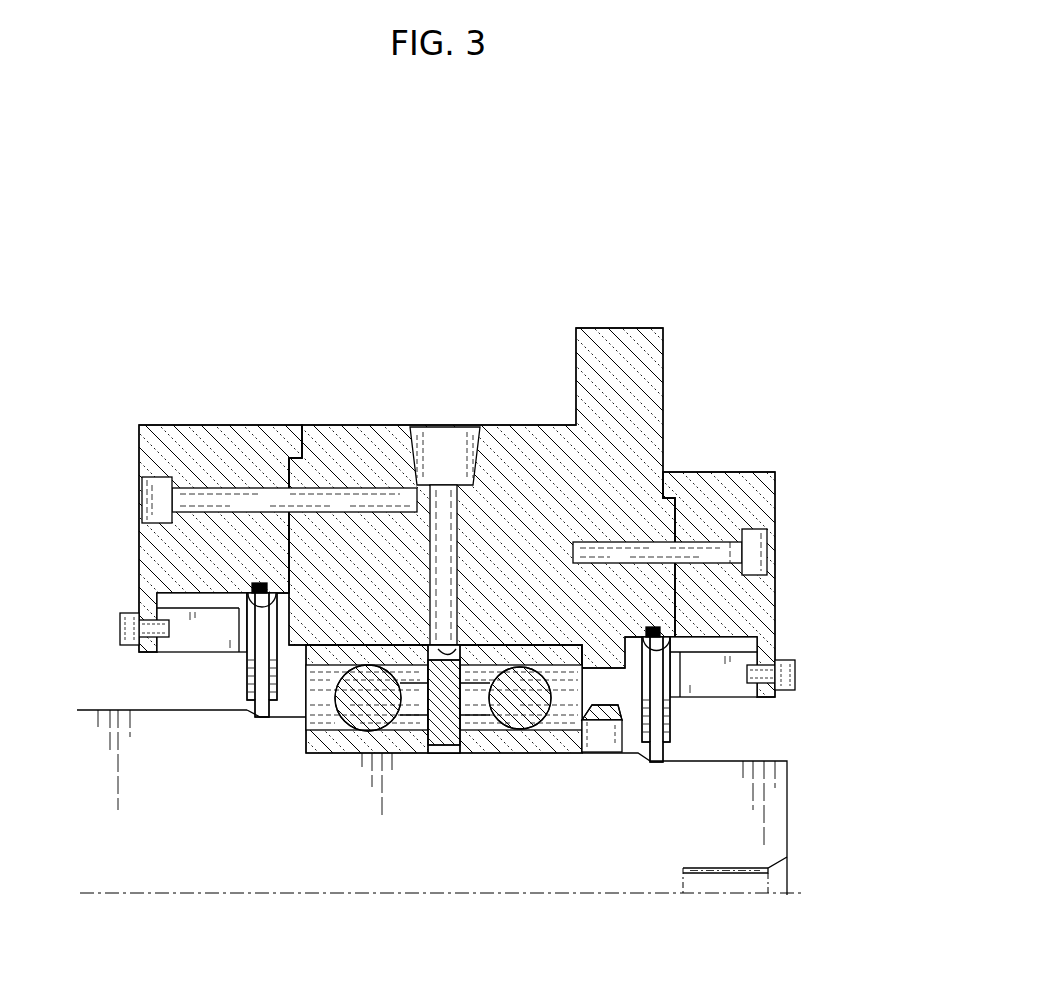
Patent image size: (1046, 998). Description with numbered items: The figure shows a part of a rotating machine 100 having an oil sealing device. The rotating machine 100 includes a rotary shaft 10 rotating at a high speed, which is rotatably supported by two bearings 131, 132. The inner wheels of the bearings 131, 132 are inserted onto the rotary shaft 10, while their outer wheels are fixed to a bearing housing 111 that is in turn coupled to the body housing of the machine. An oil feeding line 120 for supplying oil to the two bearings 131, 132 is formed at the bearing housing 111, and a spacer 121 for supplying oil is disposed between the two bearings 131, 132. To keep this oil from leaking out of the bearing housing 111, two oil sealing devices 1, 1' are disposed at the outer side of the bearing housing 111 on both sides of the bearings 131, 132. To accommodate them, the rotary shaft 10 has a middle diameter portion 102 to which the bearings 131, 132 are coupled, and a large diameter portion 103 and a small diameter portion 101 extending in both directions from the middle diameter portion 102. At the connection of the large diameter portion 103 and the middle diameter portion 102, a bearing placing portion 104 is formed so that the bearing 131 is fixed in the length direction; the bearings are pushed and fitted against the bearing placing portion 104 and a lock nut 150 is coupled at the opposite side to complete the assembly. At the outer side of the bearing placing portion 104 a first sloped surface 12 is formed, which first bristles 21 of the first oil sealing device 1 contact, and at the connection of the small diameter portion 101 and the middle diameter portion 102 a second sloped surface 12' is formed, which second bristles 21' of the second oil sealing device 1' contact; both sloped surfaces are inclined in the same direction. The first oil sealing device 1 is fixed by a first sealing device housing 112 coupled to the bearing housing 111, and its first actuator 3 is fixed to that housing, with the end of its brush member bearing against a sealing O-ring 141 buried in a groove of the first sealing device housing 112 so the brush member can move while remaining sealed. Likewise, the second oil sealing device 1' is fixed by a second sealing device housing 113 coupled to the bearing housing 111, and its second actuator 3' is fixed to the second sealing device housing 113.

The rotating machine 100 is at (413, 287).
The first oil sealing device 1 is at (162, 760).
The second oil sealing device 1' is at (718, 828).
The first actuator 3 is at (183, 637).
The second actuator 3' is at (732, 682).
The rotary shaft 10 is at (248, 873).
The first sloped surface 12 is at (252, 736).
The second sloped surface 12' is at (616, 783).
The first bristles 21 is at (258, 685).
The second bristles 21' is at (651, 729).
The small diameter portion 101 is at (693, 846).
The middle diameter portion 102 is at (428, 873).
The large diameter portion 103 is at (180, 873).
The bearing placing portion 104 is at (306, 742).
The bearing housing 111 is at (355, 427).
The first sealing device housing 112 is at (226, 425).
The second sealing device housing 113 is at (733, 476).
The oil feeding line 120 is at (457, 569).
The spacer 121 is at (445, 753).
The bearing 131 is at (330, 753).
The bearing 132 is at (538, 753).
The sealing O-ring 141 is at (259, 583).
The lock nut 150 is at (597, 765).